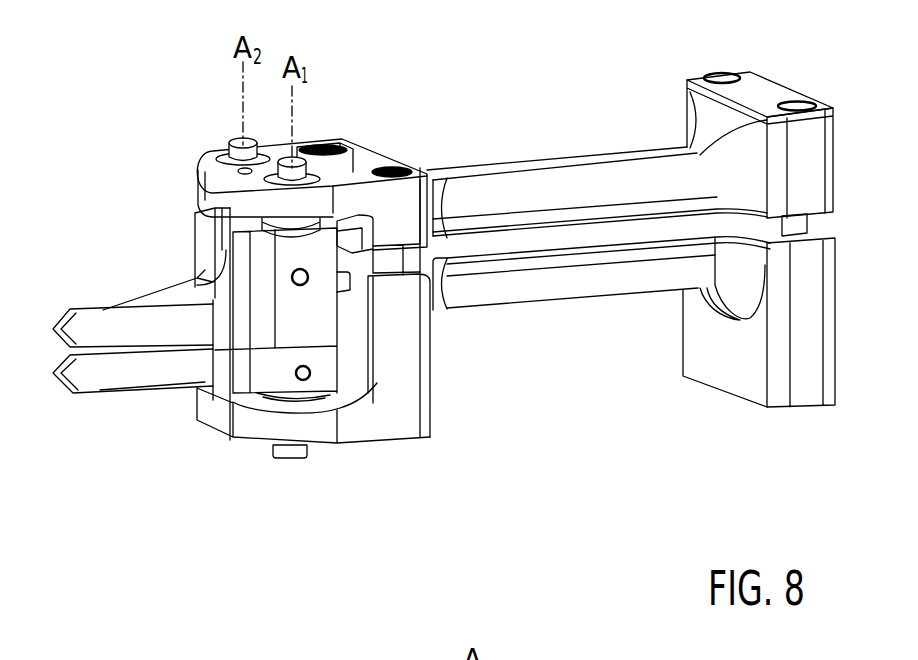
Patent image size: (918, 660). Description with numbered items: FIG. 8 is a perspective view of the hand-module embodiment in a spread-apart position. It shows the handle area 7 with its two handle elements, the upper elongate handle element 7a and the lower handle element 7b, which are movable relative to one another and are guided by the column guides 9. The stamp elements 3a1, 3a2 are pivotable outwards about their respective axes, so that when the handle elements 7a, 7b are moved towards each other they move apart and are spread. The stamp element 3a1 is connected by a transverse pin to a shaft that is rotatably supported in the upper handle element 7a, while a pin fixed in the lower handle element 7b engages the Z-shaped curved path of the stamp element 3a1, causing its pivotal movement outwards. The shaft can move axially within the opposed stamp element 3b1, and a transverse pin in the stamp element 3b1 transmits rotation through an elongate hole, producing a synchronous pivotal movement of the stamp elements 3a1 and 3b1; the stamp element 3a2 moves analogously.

The stamp element 3a1 is at (450, 423).
The stamp element 3a2 is at (203, 244).
The stamp element 3b1 is at (102, 387).
The handle area 7 is at (617, 140).
The upper handle element 7a is at (547, 175).
The lower handle element 7b is at (620, 283).
The column guides 9 is at (398, 267).